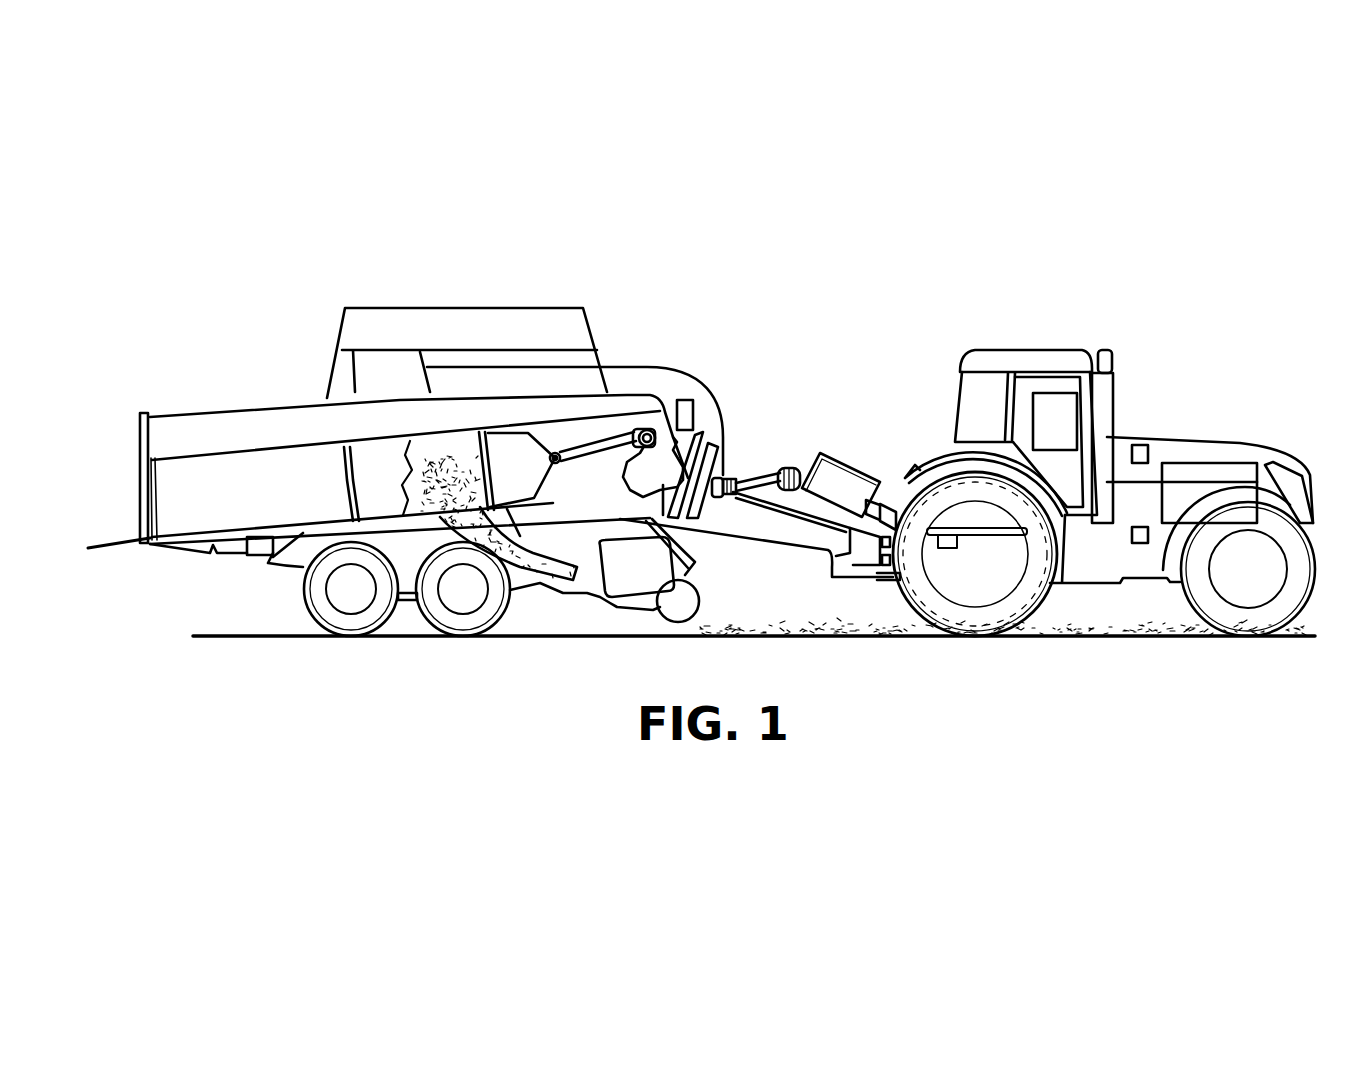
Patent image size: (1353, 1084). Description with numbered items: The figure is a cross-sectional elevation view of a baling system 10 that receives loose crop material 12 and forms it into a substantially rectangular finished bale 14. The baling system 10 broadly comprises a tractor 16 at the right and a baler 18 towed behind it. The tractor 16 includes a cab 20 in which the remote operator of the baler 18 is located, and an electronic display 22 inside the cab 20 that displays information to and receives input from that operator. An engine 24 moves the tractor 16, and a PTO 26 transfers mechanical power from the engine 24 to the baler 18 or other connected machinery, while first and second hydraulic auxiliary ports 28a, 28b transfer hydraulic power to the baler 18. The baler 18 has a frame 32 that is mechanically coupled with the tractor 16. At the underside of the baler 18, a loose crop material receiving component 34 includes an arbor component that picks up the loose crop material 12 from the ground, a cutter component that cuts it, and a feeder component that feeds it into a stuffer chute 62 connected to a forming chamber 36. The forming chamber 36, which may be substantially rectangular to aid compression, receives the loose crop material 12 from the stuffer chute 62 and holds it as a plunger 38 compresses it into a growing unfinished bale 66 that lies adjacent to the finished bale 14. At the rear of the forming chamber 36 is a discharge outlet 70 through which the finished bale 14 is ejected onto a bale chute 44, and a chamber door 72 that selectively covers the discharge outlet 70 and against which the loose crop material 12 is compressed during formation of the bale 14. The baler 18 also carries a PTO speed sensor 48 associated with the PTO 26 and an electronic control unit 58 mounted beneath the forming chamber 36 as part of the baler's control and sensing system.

The baling system 10 is at (1178, 305).
The loose crop material 12 is at (739, 604).
The finished bale 14 is at (263, 510).
The tractor 16 is at (1224, 402).
The baler 18 is at (738, 368).
The cab 20 is at (1040, 338).
The electronic display 22 is at (1055, 421).
The engine 24 is at (1233, 470).
The PTO 26 is at (1004, 548).
The first hydraulic auxiliary port 28a is at (857, 518).
The second hydraulic auxiliary port 28b is at (780, 468).
The frame 32 is at (747, 522).
The loose crop material receiving component 34 is at (636, 632).
The forming chamber 36 is at (212, 556).
The plunger 38 is at (536, 482).
The bale chute 44 is at (119, 554).
The PTO speed sensor 48 is at (947, 550).
The electronic control unit 58 is at (263, 557).
The stuffer chute 62 is at (516, 578).
The unfinished bale 66 is at (398, 495).
The discharge outlet 70 is at (128, 480).
The chamber door 72 is at (141, 512).